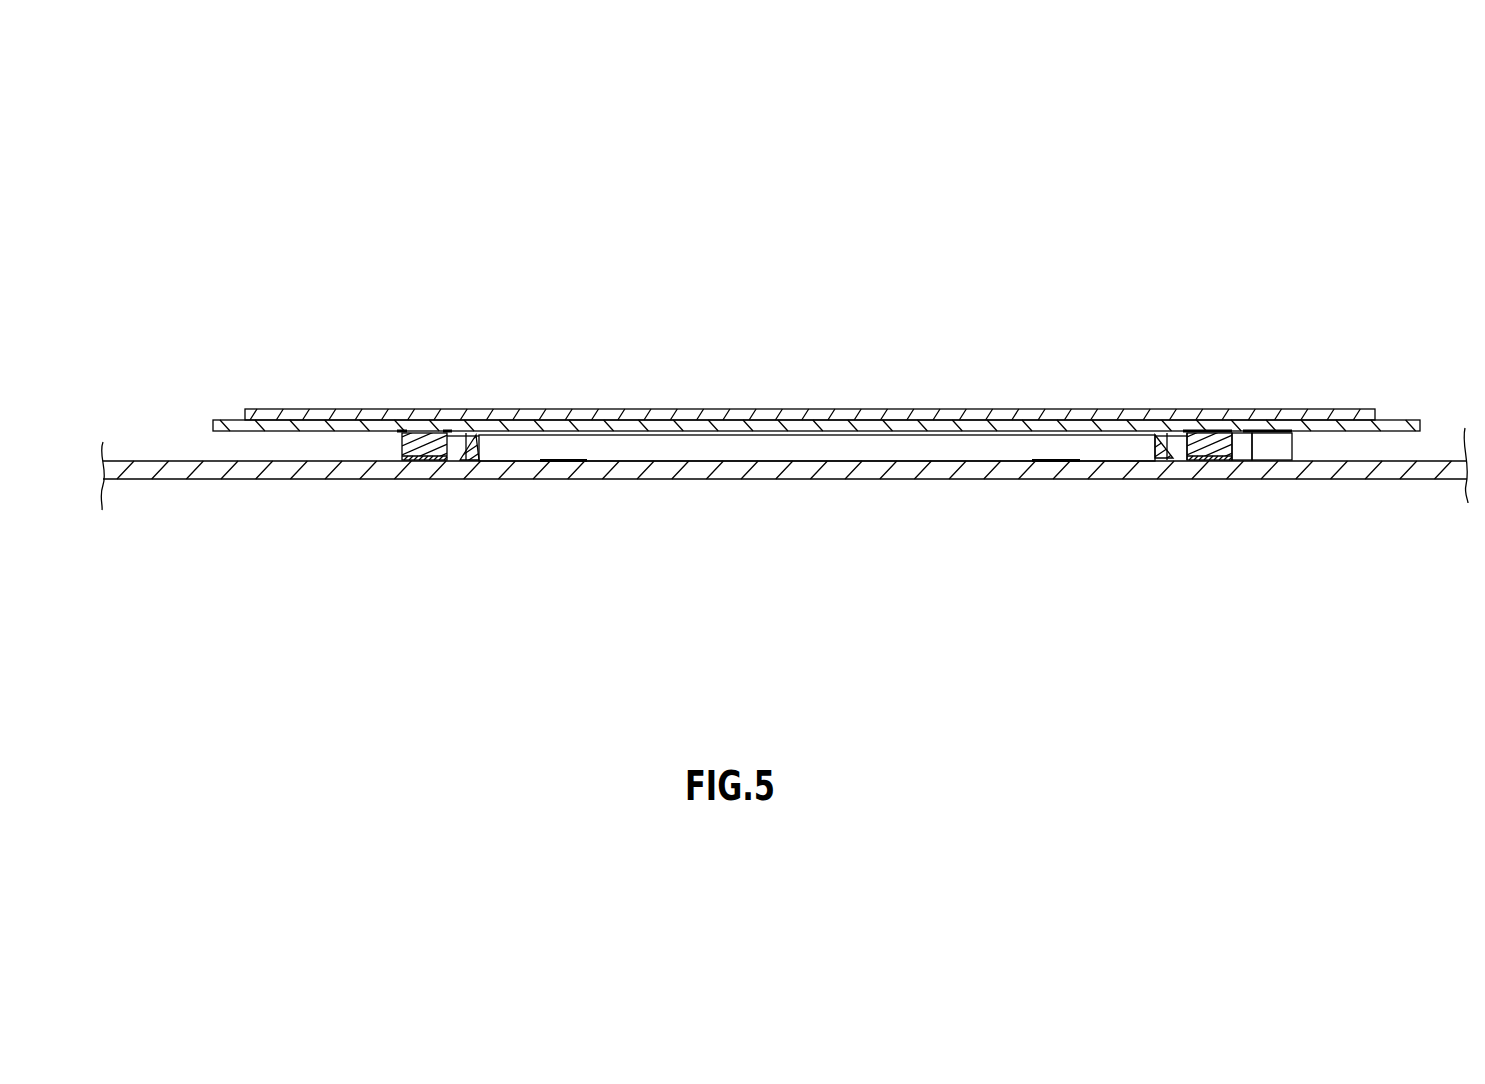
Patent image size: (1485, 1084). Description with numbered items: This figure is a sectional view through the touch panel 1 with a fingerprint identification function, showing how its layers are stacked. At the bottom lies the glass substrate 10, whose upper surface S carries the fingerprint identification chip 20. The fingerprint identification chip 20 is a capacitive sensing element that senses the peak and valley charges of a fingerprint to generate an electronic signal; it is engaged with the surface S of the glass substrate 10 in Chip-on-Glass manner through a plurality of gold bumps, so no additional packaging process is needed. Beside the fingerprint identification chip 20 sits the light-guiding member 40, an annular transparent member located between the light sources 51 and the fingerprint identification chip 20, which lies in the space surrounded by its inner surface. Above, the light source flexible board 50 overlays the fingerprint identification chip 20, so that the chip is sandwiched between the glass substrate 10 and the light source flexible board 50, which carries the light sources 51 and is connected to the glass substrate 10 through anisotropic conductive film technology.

The touch panel 1 is at (384, 192).
The glass substrate 10 is at (217, 480).
The fingerprint identification chip 20 is at (672, 447).
The light-guiding member 40 is at (1202, 435).
The light source flexible board 50 is at (1282, 417).
The light sources 51 is at (1270, 447).
The surface S is at (1390, 461).